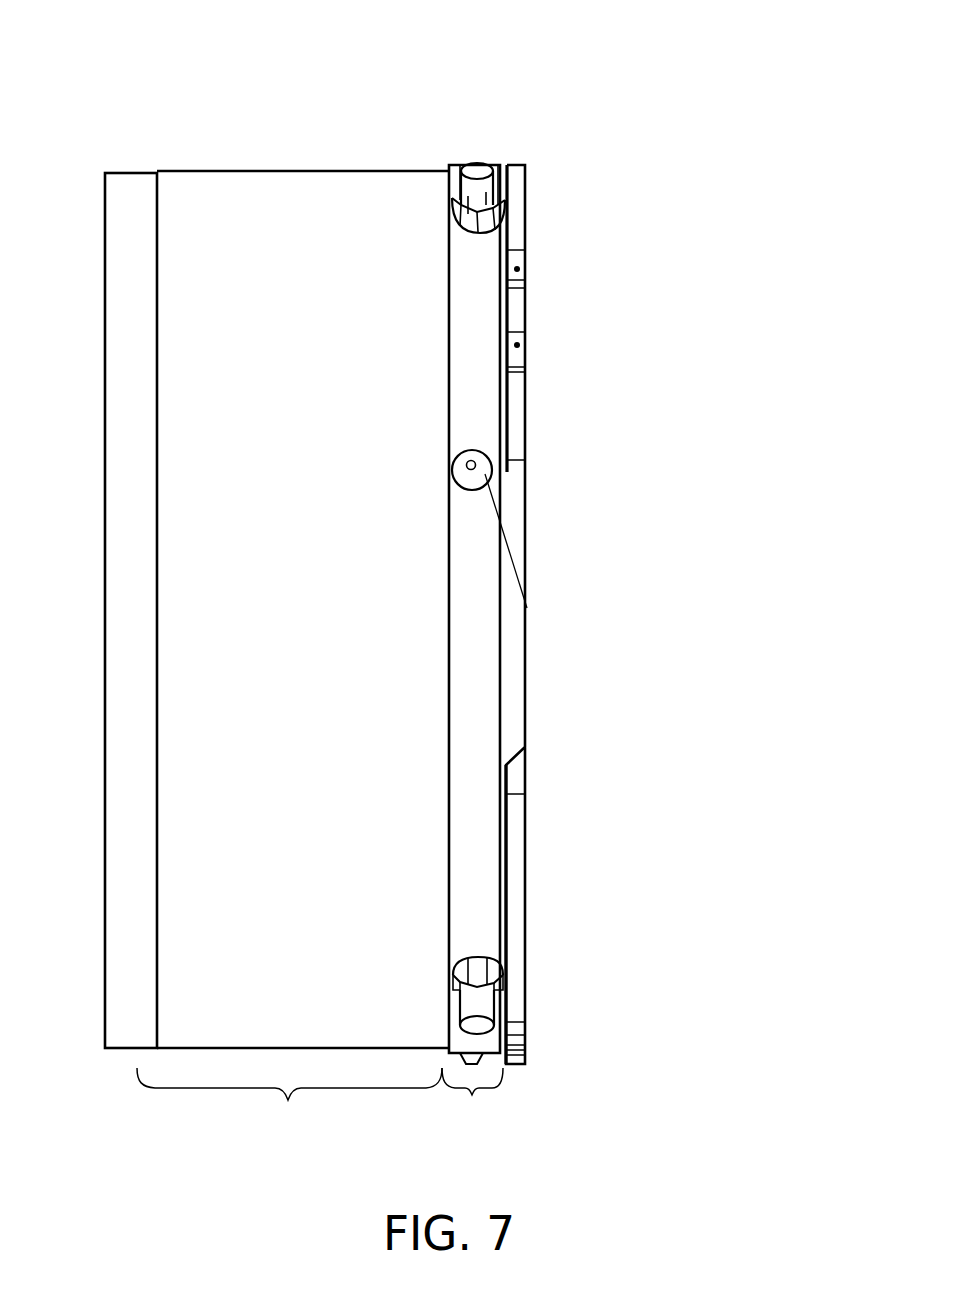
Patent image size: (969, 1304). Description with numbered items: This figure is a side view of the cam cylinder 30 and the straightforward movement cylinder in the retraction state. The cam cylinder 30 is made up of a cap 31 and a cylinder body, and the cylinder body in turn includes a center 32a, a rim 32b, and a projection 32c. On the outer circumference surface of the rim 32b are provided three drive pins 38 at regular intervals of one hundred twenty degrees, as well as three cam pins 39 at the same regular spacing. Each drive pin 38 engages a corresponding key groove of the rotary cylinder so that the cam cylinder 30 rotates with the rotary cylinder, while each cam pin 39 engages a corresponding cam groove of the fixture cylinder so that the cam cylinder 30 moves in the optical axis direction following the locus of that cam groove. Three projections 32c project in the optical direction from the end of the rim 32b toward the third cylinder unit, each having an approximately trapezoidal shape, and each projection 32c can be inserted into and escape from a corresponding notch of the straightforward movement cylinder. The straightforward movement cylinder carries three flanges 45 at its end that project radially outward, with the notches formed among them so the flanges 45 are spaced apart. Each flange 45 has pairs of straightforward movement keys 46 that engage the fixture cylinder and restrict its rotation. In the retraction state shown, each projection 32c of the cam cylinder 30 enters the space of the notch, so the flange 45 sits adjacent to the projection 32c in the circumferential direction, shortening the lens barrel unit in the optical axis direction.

The cam cylinder 30 is at (200, 172).
The cap 31 is at (108, 195).
The center 32a is at (289, 1115).
The rim 32b is at (487, 661).
The projection 32c is at (512, 663).
The drive pin 38 is at (477, 165).
The cam pin 39 is at (484, 473).
The flange 45 is at (522, 200).
The straightforward movement key 46 is at (517, 269).